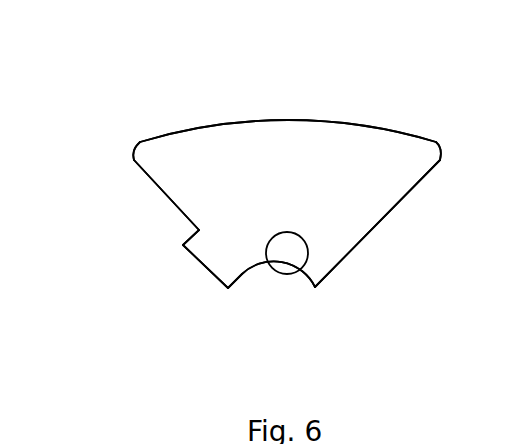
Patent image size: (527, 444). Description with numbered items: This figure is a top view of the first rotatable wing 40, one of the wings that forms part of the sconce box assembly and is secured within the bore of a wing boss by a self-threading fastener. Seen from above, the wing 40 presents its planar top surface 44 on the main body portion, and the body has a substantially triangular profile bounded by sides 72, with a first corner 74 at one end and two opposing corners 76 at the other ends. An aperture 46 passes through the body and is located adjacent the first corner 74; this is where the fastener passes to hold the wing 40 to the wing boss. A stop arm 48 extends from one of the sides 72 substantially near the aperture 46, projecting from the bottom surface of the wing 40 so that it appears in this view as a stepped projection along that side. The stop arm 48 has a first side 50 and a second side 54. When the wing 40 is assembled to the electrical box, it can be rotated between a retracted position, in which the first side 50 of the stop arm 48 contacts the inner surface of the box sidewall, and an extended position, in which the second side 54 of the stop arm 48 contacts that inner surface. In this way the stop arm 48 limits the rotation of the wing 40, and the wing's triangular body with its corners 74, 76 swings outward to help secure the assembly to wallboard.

The first rotatable wing 40 is at (104, 108).
The planar top surface 44 is at (298, 188).
The aperture 46 is at (287, 252).
The stop arm 48 is at (203, 269).
The first side 50 is at (238, 289).
The second side 54 is at (194, 233).
The sides 72 is at (163, 196).
The first corner 74 is at (285, 298).
The opposing corners 76 is at (133, 153).